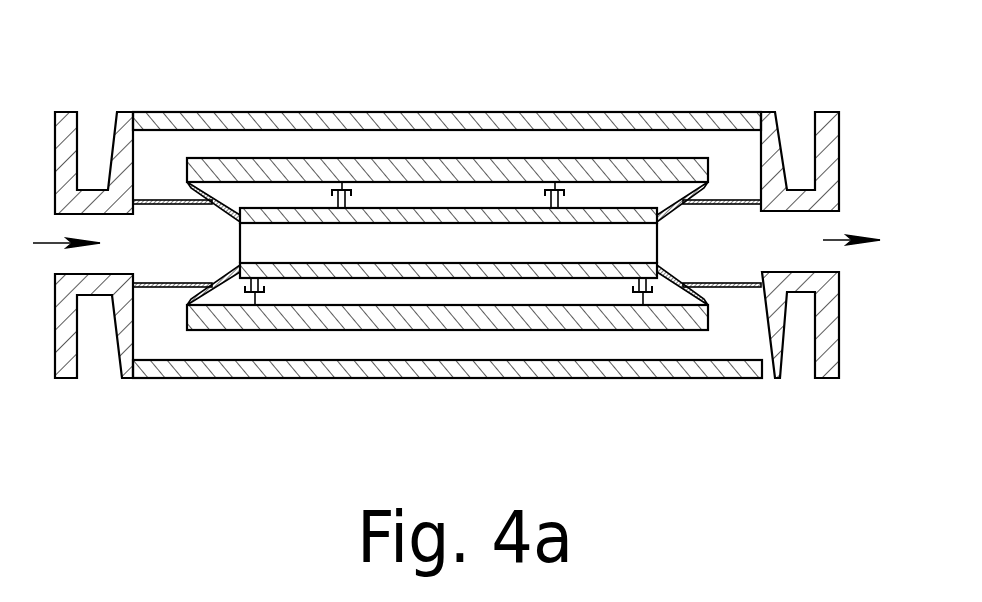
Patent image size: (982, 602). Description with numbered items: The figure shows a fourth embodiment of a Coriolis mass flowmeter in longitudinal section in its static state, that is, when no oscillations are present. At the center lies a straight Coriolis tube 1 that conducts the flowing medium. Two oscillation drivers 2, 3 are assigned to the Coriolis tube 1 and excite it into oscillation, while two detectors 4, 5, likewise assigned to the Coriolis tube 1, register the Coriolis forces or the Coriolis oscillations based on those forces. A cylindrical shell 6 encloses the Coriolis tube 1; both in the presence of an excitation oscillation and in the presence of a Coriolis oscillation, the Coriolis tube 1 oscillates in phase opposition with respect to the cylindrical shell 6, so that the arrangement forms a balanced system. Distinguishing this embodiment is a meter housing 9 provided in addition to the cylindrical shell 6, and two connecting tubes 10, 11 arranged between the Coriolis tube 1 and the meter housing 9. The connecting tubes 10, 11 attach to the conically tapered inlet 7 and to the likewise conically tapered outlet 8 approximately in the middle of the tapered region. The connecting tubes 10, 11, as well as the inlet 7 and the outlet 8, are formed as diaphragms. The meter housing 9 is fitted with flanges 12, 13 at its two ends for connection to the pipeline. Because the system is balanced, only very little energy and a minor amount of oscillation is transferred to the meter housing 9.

The Coriolis tube 1 is at (600, 212).
The oscillation driver 2 is at (258, 300).
The oscillation driver 3 is at (646, 300).
The detector 4 is at (345, 186).
The detector 5 is at (556, 186).
The cylindrical shell 6 is at (307, 172).
The conically tapered inlet 7 is at (213, 158).
The conically tapered outlet 8 is at (683, 291).
The meter housing 9 is at (695, 100).
The connecting tube 10 is at (164, 288).
The connecting tube 11 is at (736, 200).
The flange 12 is at (52, 112).
The flange 13 is at (835, 380).